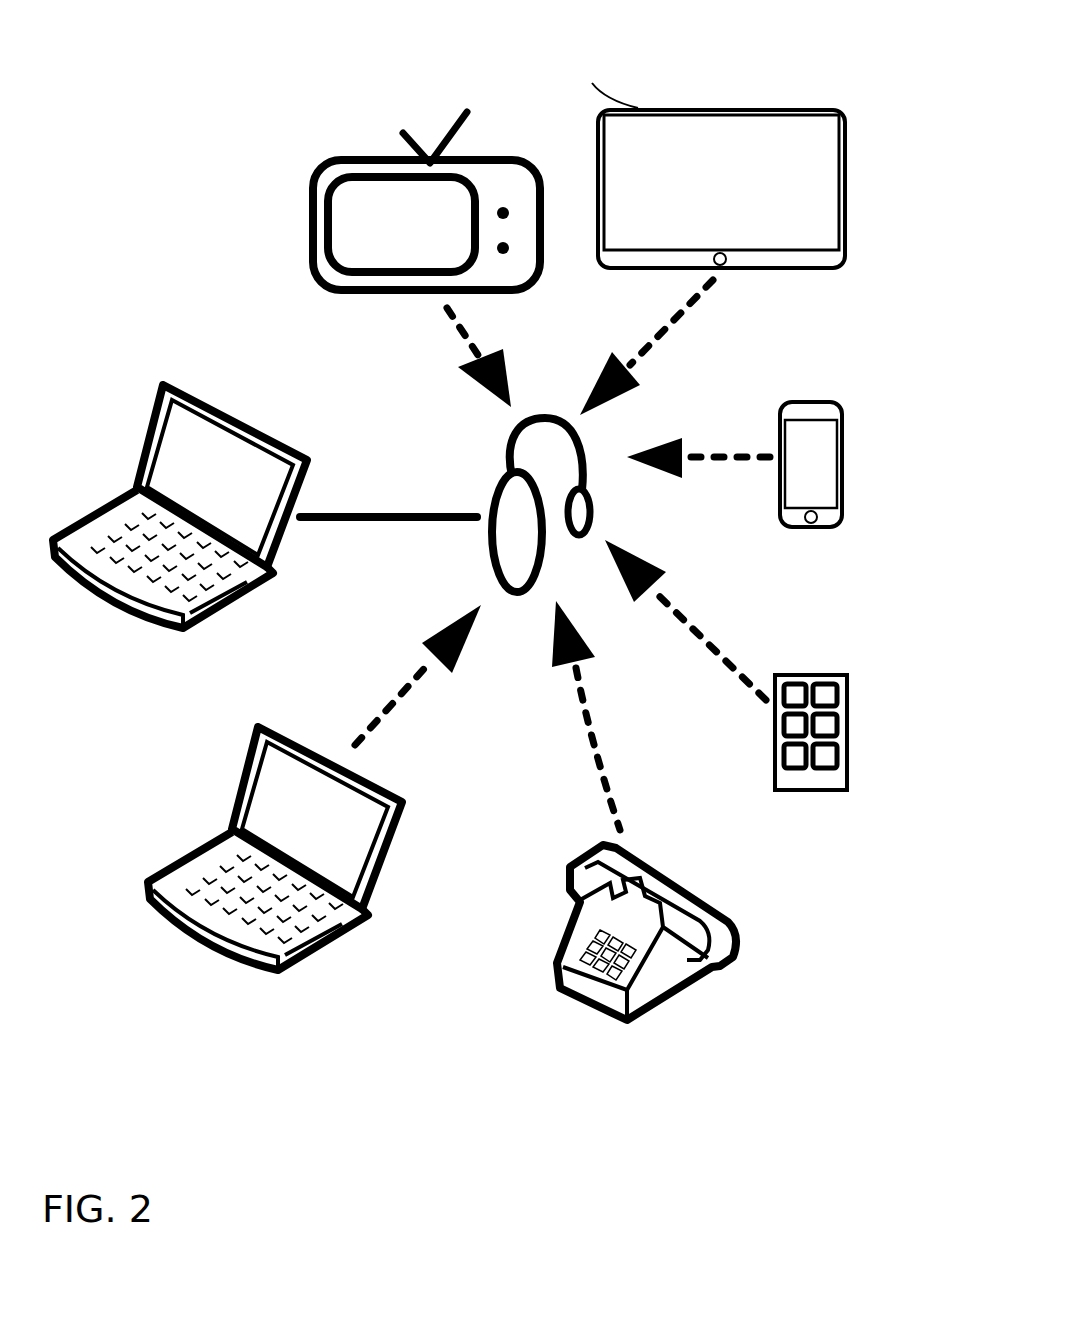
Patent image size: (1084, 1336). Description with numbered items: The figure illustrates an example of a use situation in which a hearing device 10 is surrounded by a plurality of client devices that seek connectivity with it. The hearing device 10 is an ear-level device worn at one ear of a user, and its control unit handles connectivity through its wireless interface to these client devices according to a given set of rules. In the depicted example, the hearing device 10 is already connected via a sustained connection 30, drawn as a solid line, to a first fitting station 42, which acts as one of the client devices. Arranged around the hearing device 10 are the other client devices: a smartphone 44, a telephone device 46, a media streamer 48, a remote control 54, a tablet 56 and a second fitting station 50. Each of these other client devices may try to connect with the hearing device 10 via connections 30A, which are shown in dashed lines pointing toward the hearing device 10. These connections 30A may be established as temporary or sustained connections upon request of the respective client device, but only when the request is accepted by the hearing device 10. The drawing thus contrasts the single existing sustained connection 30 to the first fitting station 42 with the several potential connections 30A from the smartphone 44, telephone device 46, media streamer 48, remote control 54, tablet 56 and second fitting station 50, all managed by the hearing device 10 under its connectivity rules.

The hearing device 10 is at (505, 514).
The sustained connection 30 is at (370, 523).
The connections 30A is at (655, 322).
The first fitting station 42 is at (163, 452).
The smartphone 44 is at (824, 478).
The telephone device 46 is at (673, 985).
The media streamer 48 is at (483, 187).
The second fitting station 50 is at (300, 933).
The remote control 54 is at (828, 735).
The tablet 56 is at (790, 150).